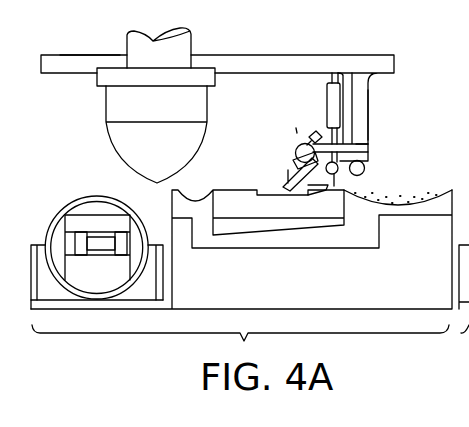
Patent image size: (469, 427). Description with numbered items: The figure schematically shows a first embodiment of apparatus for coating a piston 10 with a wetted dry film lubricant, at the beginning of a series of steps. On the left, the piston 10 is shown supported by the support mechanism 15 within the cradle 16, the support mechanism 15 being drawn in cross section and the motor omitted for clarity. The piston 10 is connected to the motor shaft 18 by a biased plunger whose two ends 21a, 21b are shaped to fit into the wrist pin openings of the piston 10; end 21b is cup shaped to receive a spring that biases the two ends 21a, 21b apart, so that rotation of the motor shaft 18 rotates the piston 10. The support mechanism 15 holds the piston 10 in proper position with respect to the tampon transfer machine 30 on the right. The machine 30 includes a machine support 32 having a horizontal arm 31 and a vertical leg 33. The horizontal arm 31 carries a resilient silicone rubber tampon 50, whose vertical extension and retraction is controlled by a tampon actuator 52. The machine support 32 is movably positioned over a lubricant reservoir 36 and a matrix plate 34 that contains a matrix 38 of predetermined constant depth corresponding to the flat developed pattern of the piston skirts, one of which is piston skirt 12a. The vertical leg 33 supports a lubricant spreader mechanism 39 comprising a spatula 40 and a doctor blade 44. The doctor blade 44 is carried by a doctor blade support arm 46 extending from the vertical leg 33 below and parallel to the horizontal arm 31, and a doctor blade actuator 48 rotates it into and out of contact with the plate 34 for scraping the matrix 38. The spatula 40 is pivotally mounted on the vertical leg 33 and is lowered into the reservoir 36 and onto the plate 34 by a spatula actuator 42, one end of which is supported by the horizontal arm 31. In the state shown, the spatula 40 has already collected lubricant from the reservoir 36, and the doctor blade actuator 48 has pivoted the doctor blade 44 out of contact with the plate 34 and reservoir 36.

The piston 10 is at (34, 233).
The piston skirt 12a is at (81, 200).
The support mechanism 15 is at (139, 290).
The cradle 16 is at (108, 310).
The motor shaft 18 is at (97, 244).
The plunger end 21a is at (113, 232).
The plunger end 21b is at (102, 211).
The tampon transfer machine 30 is at (309, 57).
The horizontal arm 31 is at (254, 60).
The machine support 32 is at (365, 58).
The vertical leg 33 is at (362, 131).
The matrix plate 34 is at (232, 189).
The lubricant reservoir 36 is at (412, 191).
The matrix 38 is at (282, 185).
The lubricant spreader mechanism 39 is at (297, 128).
The spatula 40 is at (342, 186).
The spatula actuator 42 is at (334, 122).
The doctor blade 44 is at (285, 187).
The doctor blade support arm 46 is at (368, 147).
The doctor blade actuator 48 is at (311, 135).
The tampon 50 is at (110, 133).
The tampon actuator 52 is at (191, 52).